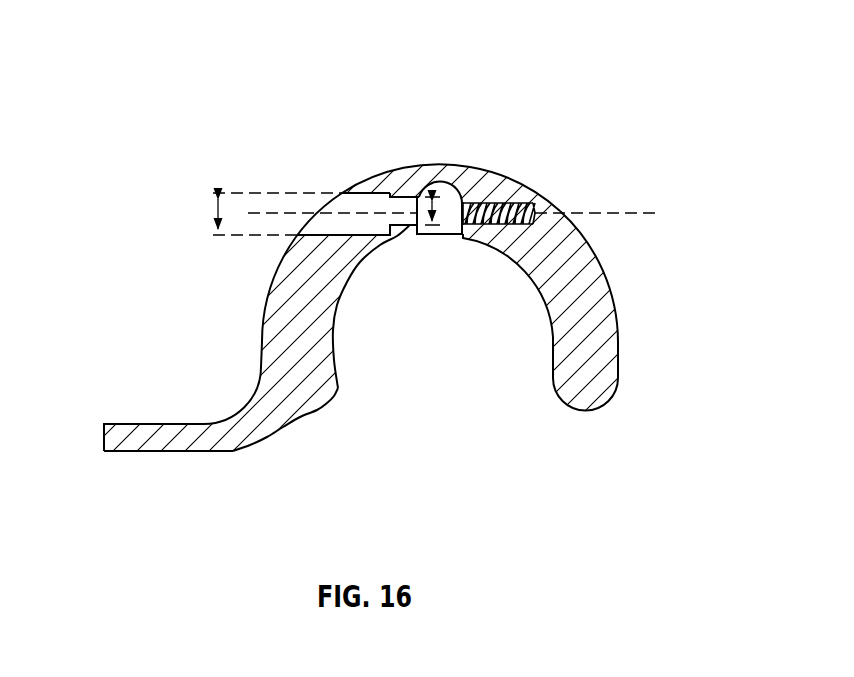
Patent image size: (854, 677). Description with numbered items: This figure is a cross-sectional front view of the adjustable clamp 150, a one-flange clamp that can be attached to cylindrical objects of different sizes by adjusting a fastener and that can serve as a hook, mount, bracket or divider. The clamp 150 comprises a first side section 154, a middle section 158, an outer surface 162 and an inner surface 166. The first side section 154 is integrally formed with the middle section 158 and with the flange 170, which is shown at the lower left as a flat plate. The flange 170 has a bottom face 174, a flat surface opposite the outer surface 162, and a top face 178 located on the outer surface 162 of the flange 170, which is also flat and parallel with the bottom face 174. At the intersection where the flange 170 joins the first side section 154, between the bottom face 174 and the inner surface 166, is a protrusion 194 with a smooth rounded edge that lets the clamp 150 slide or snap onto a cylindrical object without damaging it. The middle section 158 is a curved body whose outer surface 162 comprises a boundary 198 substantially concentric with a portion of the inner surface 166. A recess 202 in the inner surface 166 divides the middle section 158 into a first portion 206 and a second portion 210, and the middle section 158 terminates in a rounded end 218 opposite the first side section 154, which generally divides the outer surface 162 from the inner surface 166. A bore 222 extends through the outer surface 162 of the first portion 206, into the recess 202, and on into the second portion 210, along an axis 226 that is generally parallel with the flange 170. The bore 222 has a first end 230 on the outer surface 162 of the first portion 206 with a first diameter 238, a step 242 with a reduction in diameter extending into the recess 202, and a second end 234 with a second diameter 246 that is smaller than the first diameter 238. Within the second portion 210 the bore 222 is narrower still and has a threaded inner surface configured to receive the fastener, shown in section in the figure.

The adjustable clamp 150 is at (136, 117).
The first side section 154 is at (246, 371).
The middle section 158 is at (422, 166).
The outer surface 162 is at (621, 315).
The inner surface 166 is at (549, 333).
The flange 170 is at (110, 426).
The bottom face 174 is at (148, 451).
The top face 178 is at (172, 424).
The protrusion 194 is at (338, 388).
The boundary 198 is at (488, 167).
The recess 202 is at (459, 234).
The first portion 206 is at (272, 276).
The second portion 210 is at (611, 261).
The rounded end 218 is at (587, 408).
The bore 222 is at (323, 212).
The axis 226 is at (636, 212).
The first end 230 is at (345, 193).
The second end 234 is at (420, 228).
The first diameter 238 is at (216, 206).
The step 242 is at (393, 193).
The second diameter 246 is at (477, 201).